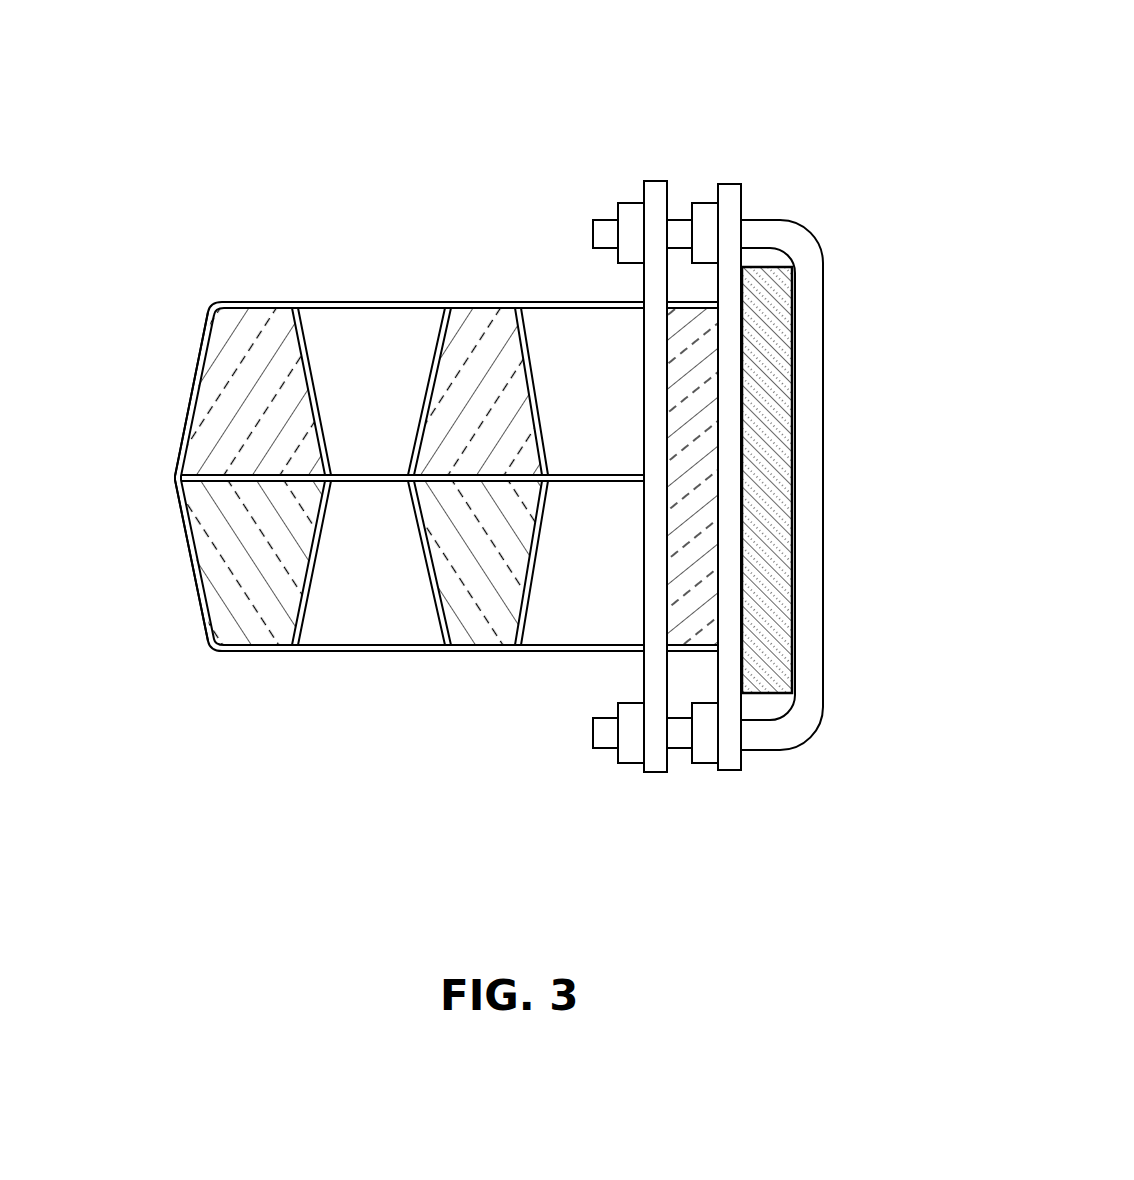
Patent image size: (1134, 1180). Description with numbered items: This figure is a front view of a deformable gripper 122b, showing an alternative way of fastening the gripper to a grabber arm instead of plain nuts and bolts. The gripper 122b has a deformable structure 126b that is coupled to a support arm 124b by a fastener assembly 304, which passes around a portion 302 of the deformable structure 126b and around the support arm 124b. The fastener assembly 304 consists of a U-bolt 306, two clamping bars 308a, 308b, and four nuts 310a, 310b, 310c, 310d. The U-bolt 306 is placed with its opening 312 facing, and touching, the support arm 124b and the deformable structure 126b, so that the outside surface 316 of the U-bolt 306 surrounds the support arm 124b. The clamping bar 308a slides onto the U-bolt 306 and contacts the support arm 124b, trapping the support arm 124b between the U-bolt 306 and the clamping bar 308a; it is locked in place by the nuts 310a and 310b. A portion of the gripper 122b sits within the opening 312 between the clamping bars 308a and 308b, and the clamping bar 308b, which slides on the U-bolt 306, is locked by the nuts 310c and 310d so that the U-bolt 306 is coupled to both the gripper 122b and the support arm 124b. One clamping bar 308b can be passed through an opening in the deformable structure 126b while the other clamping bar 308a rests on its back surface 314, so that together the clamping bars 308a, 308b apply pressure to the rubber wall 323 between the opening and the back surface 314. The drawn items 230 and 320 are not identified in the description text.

The gripper 122b is at (356, 470).
The deformable structure 126b is at (148, 548).
The second cushion section 320 is at (473, 715).
The mounting assembly 230 is at (599, 489).
The portion 302 is at (611, 429).
The rubber wall 323 is at (685, 577).
The fastener assembly 304 is at (736, 447).
The U-bolt 306 is at (866, 480).
The support arm 124b is at (793, 403).
The opening 312 is at (762, 703).
The back surface 314 is at (719, 527).
The outside surface 316 is at (793, 600).
The clamping bar 308a is at (840, 515).
The clamping bar 308b is at (650, 773).
The nut 310a is at (703, 765).
The nut 310b is at (706, 203).
The nut 310c is at (617, 205).
The nut 310d is at (618, 760).